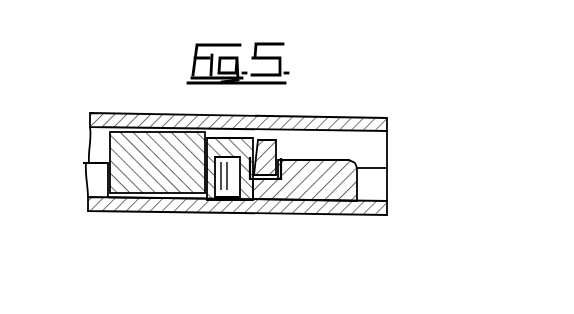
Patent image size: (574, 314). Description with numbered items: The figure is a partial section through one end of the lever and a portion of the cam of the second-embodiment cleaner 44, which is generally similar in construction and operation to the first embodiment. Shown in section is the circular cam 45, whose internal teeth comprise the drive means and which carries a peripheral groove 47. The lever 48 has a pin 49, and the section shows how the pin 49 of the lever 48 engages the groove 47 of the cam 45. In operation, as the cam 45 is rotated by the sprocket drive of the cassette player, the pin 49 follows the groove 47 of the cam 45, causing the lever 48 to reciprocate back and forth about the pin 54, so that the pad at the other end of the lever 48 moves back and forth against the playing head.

The cleaner 44 is at (322, 95).
The cam 45 is at (349, 161).
The peripheral groove 47 is at (275, 158).
The lever 48 is at (165, 143).
The pin 49 is at (262, 150).
The pin 54 is at (172, 197).